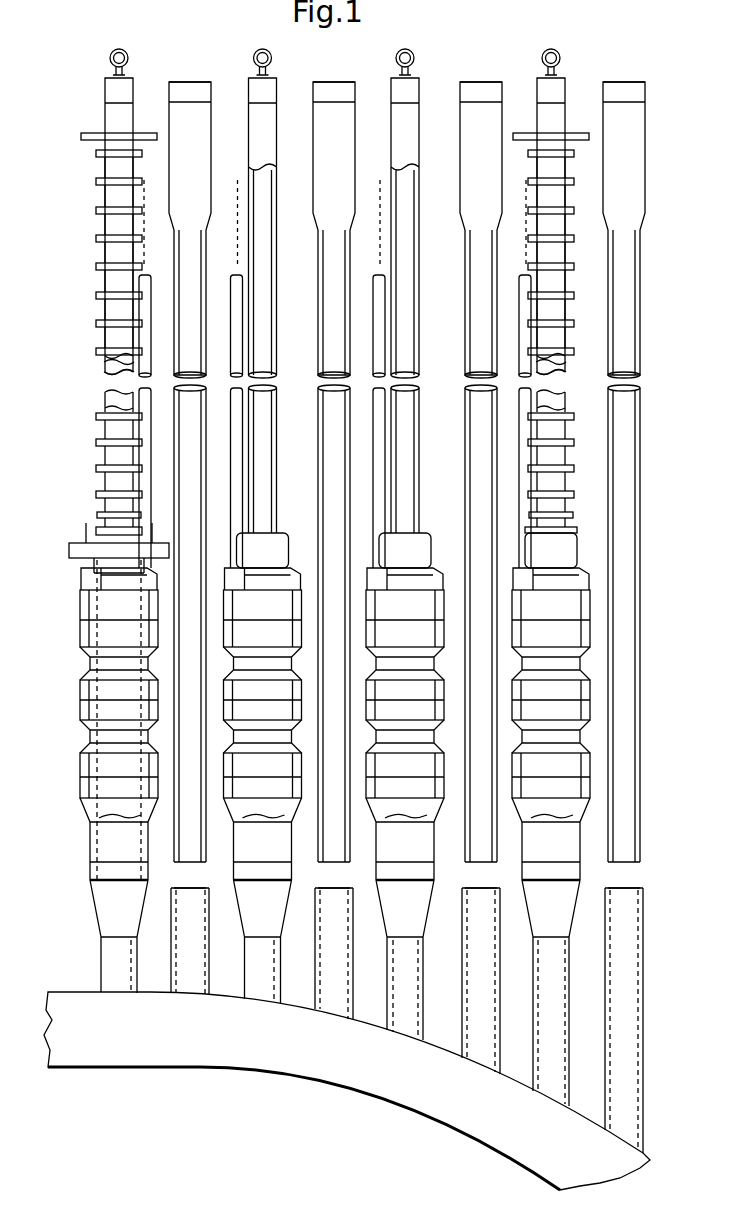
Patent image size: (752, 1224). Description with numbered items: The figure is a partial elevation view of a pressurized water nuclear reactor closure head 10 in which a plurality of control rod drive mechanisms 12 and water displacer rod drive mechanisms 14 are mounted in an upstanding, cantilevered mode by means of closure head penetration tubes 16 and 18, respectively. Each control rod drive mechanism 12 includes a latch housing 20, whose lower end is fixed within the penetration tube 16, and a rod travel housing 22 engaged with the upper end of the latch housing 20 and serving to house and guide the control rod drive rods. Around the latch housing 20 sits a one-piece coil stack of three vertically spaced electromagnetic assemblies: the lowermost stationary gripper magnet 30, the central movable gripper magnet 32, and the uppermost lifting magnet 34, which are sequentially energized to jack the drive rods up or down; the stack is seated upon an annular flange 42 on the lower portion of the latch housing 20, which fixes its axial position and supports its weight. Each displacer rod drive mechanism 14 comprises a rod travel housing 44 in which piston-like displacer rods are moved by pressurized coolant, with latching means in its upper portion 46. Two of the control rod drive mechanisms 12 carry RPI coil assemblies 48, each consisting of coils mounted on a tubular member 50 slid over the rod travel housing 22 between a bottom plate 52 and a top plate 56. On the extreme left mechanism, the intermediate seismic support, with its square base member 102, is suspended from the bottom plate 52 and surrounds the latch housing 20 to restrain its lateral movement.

The closure head 10 is at (293, 1060).
The control rod drive mechanism 12 is at (92, 869).
The water displacer rod drive mechanism 14 is at (204, 83).
The CRDM closure head penetration tube 16 is at (104, 956).
The DRDM closure head penetration tube 18 is at (176, 926).
The latch housing 20 is at (90, 567).
The rod travel housing 22 is at (126, 98).
The stationary gripper magnet 30 is at (82, 782).
The movable gripper magnet 32 is at (82, 711).
The lifting magnet 34 is at (82, 608).
The annular flange 42 is at (120, 818).
The displacer rod travel housing 44 is at (185, 344).
The upper portion of DRDM assembly 46 is at (206, 149).
The RPI coil assembly 48 is at (97, 182).
The tubular member 50 is at (103, 367).
The bottom plate 52 is at (97, 526).
The top plate 56 is at (97, 134).
The base member 102 is at (70, 548).